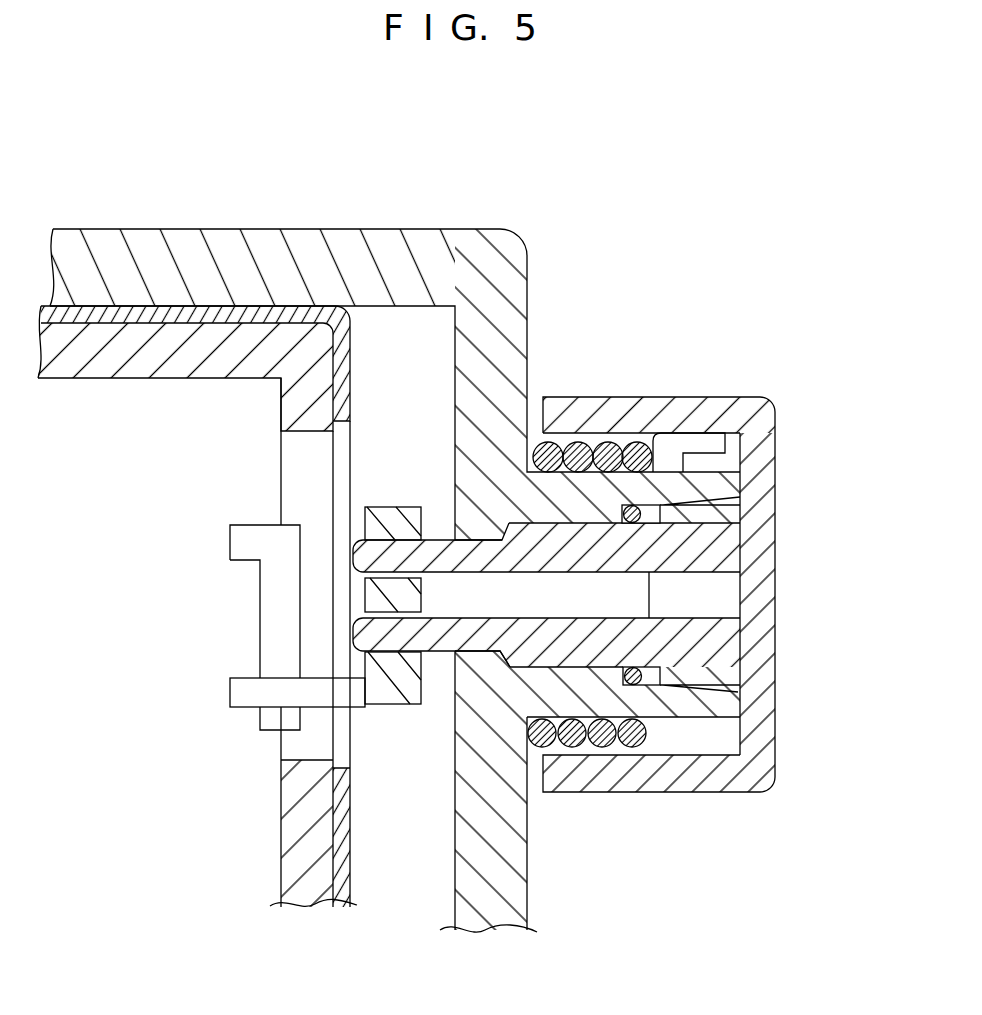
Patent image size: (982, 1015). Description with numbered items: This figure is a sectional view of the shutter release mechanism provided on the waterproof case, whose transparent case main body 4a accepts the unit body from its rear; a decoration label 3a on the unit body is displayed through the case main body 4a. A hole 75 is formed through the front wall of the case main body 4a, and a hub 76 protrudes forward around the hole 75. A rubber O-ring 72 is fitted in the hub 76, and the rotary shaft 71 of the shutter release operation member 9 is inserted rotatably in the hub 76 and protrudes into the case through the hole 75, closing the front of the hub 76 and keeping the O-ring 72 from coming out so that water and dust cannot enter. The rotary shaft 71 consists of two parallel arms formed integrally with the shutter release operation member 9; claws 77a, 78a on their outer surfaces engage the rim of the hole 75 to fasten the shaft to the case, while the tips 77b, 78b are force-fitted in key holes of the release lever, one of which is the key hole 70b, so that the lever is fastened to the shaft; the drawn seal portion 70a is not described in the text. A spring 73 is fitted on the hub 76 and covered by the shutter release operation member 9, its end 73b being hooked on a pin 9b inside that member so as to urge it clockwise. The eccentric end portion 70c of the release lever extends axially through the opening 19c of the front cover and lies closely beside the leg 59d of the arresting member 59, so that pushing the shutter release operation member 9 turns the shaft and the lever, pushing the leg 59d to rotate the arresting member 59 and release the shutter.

The case main body 4a is at (278, 243).
The decoration label 3a is at (345, 882).
The opening 19c is at (283, 445).
The shutter release operation member 9 is at (774, 395).
The pin 9b is at (730, 442).
The holder upper seal portion 70a is at (367, 505).
The key hole 70b is at (392, 710).
The eccentric end portion 70c is at (243, 690).
The arresting member 59 is at (247, 730).
The leg 59d is at (270, 732).
The claw 77a is at (453, 524).
The tip 77b is at (364, 561).
The claw 78a is at (452, 647).
The tip 78b is at (355, 636).
The hole 75 is at (500, 651).
The hub 76 is at (694, 727).
The rotary shaft 71 is at (600, 678).
The O-ring 72 is at (640, 674).
The spring 73 is at (592, 434).
The other end of the spring 73b is at (690, 452).